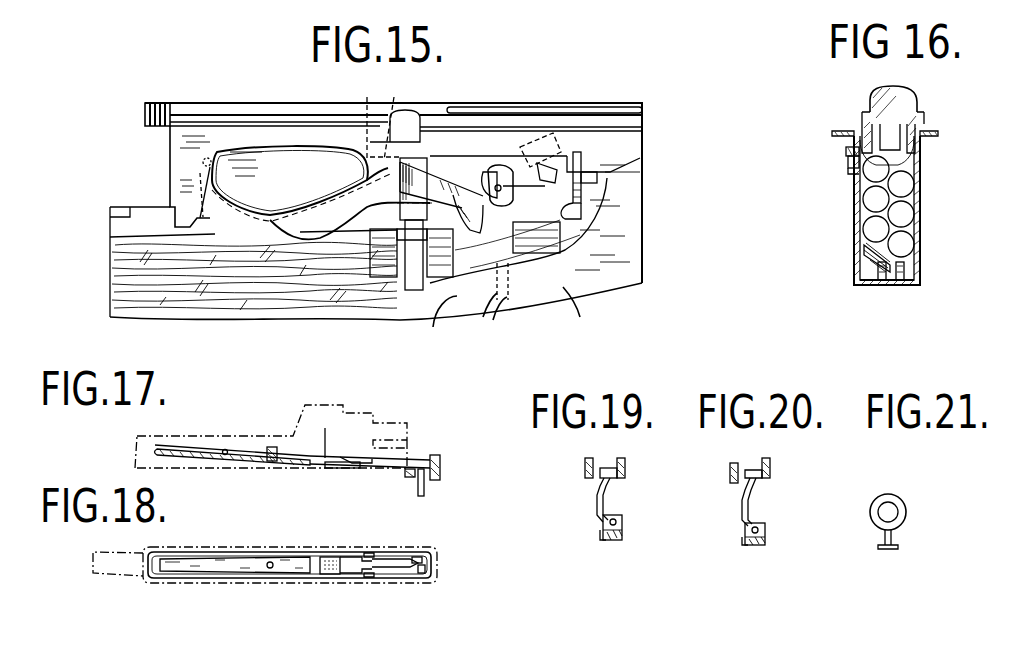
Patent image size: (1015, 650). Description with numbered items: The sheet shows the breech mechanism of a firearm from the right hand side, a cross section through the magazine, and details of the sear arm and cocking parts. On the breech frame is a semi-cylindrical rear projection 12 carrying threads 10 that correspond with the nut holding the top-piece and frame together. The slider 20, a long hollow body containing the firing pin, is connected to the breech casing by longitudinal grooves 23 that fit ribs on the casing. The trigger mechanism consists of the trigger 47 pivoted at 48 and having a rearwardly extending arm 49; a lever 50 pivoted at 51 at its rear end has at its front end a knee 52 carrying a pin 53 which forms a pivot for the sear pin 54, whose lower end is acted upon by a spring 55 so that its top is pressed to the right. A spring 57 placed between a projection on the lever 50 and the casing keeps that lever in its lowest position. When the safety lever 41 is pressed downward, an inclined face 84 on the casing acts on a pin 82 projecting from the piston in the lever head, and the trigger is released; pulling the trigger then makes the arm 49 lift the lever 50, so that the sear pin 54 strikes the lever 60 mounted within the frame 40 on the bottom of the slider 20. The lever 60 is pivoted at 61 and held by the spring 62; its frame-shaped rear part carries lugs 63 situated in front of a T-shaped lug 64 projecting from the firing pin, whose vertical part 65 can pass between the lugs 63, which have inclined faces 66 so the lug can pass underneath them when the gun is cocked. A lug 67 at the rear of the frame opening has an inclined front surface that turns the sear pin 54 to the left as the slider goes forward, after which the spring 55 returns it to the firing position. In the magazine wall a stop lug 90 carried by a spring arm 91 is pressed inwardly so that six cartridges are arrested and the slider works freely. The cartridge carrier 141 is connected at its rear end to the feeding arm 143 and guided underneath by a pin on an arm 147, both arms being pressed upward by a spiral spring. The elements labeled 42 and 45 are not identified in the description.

In FIG. 15, the threads 10 is at (160, 121).
In FIG. 15, the semi-cylindrical rear projection 12 is at (143, 110).
In FIG. 15, the finger lever 42 is at (218, 164).
In FIG. 15, the pivot 51 is at (369, 118).
In FIG. 15, the lever 50 is at (562, 274).
In FIG. 19, the lever 50 is at (622, 537).
In FIG. 20, the lever 50 is at (765, 545).
In FIG. 15, the safety lever 41 is at (414, 224).
In FIG. 15, the rearwardly extending arm 49 is at (441, 173).
In FIG. 15, the spring 57 is at (467, 168).
In FIG. 15, the pivot 48 is at (503, 160).
In FIG. 15, the pin 82 is at (560, 162).
In FIG. 15, the inclined face 84 is at (529, 190).
In FIG. 15, the sear pin 54 is at (582, 192).
In FIG. 17, the sear pin 54 is at (426, 487).
In FIG. 18, the sear pin 54 is at (427, 573).
In FIG. 19, the sear pin 54 is at (597, 506).
In FIG. 20, the sear pin 54 is at (752, 507).
In FIG. 15, the trigger 45 is at (469, 224).
In FIG. 15, the knee 52 is at (557, 253).
In FIG. 15, the trigger 47 is at (497, 312).
In FIG. 16, the slider 20 is at (918, 104).
In FIG. 16, the longitudinal grooves 23 is at (893, 119).
In FIG. 16, the stop lug 90 is at (846, 150).
In FIG. 16, the spring arm 91 is at (847, 165).
In FIG. 16, the cartridge carrier 141 is at (866, 254).
In FIG. 16, the feeding arm 143 is at (879, 294).
In FIG. 16, the arm 147 is at (897, 277).
In FIG. 17, the frame 40 is at (443, 458).
In FIG. 18, the frame 40 is at (440, 553).
In FIG. 19, the frame 40 is at (585, 468).
In FIG. 20, the frame 40 is at (770, 470).
In FIG. 17, the lever 60 is at (348, 466).
In FIG. 18, the lever 60 is at (297, 578).
In FIG. 19, the lever 60 is at (625, 472).
In FIG. 20, the lever 60 is at (730, 473).
In FIG. 17, the pivot 61 is at (224, 449).
In FIG. 17, the spring 62 is at (270, 446).
In FIG. 17, the lugs 63 is at (375, 461).
In FIG. 18, the lugs 63 is at (369, 554).
In FIG. 20, the lugs 63 is at (765, 530).
In FIG. 17, the T-shaped lug 64 is at (325, 469).
In FIG. 18, the T-shaped lug 64 is at (338, 575).
In FIG. 21, the T-shaped lug 64 is at (892, 549).
In FIG. 17, the inclined faces 66 is at (368, 470).
In FIG. 17, the lug 67 is at (410, 479).
In FIG. 18, the lug 67 is at (415, 558).
In FIG. 19, the lug 67 is at (612, 478).
In FIG. 19, the pin 53 is at (622, 520).
In FIG. 19, the spring 55 is at (605, 542).
In FIG. 20, the spring 55 is at (746, 547).
In FIG. 21, the vertical part 65 is at (892, 536).